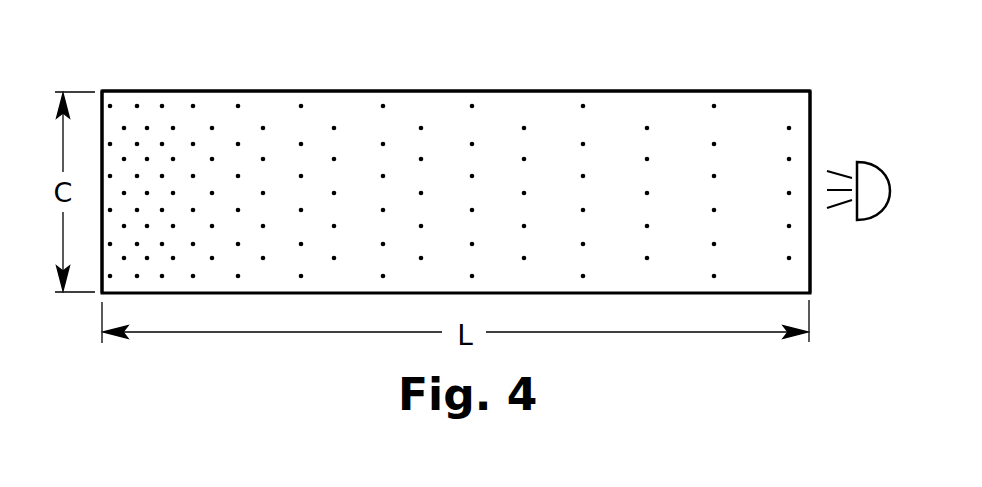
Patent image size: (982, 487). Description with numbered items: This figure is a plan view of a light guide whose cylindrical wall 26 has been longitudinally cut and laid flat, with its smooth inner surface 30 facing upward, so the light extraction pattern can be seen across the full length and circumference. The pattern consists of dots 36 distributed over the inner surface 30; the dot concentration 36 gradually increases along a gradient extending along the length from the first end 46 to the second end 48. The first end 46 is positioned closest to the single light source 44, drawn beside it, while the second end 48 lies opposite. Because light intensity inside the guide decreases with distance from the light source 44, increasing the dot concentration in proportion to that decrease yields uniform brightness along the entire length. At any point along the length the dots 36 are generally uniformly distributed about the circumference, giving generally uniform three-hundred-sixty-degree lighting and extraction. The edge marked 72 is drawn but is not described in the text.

The cylindrical wall 26 is at (258, 91).
The smooth inner surface 30 is at (450, 157).
The dots 36 is at (193, 105).
The light source 44 is at (866, 162).
The first end 46 is at (812, 110).
The second end 48 is at (101, 92).
The top edge of panel 72 is at (711, 84).